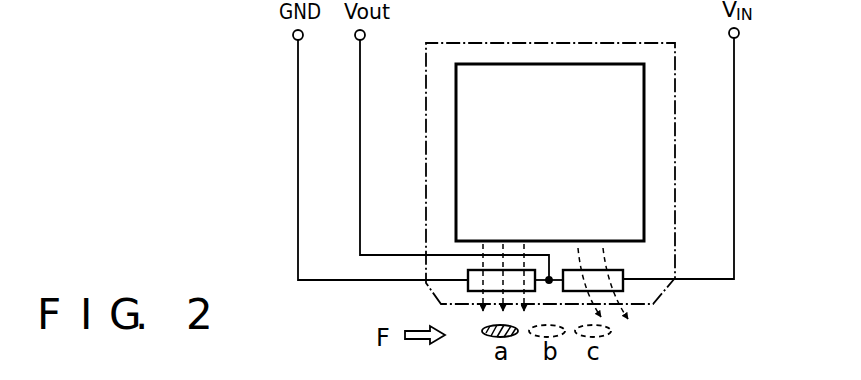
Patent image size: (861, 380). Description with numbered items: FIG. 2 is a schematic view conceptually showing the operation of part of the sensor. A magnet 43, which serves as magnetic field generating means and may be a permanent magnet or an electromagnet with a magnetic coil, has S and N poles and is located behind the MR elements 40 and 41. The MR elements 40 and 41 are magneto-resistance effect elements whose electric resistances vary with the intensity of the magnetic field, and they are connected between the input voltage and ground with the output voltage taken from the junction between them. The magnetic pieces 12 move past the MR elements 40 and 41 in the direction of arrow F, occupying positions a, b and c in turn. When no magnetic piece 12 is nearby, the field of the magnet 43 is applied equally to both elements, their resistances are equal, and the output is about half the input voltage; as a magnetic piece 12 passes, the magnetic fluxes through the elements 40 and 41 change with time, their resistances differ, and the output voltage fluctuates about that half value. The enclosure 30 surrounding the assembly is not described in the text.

The magnetic piece 12 is at (488, 338).
The magnetic sensor housing 30 is at (677, 216).
The MR element 40 is at (468, 289).
The MR element 41 is at (623, 283).
The magnet 43 is at (618, 64).